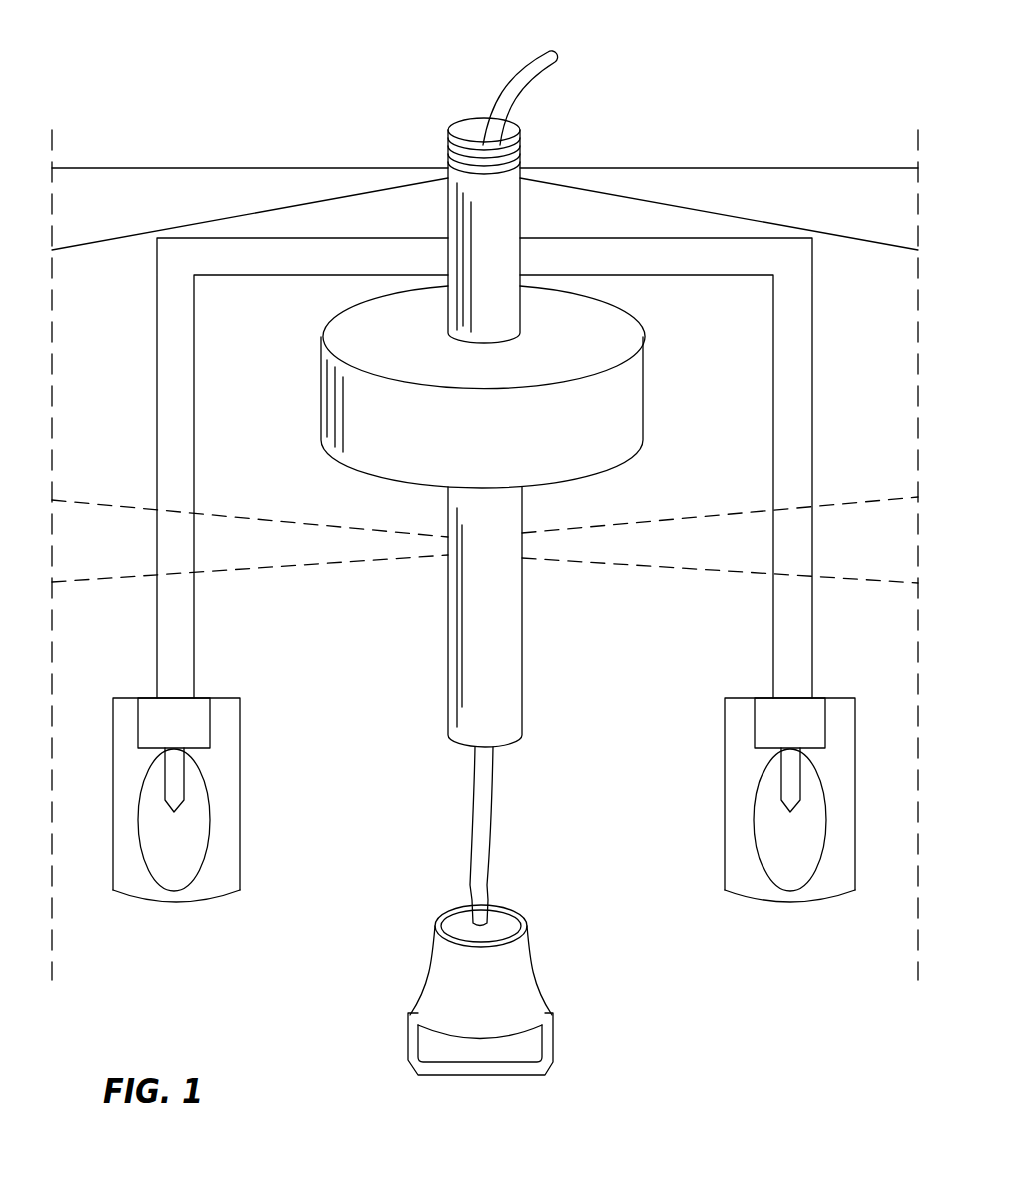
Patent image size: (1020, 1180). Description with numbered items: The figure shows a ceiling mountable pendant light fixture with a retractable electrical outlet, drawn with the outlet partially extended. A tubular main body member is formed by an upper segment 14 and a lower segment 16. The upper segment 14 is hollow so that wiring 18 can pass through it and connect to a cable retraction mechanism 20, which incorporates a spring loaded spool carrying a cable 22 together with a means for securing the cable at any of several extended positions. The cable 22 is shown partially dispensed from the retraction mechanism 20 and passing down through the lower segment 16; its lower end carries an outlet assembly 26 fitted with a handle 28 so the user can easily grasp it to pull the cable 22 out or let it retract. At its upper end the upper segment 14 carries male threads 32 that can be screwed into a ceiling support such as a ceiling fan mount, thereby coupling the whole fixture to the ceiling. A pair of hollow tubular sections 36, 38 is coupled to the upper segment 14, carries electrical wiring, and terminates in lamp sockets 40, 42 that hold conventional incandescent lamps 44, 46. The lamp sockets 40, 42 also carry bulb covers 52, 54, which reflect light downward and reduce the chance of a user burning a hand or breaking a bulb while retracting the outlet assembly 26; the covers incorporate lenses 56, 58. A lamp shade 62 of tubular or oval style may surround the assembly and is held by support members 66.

The upper segment 14 is at (446, 194).
The lower segment 16 is at (510, 705).
The wiring 18 is at (497, 84).
The cable retraction mechanism 20 is at (620, 405).
The cable 22 is at (475, 815).
The outlet assembly 26 is at (515, 990).
The handle 28 is at (480, 1077).
The male threads 32 is at (522, 152).
The tubular section 36 is at (203, 255).
The tubular section 38 is at (795, 340).
The lamp socket 40 is at (190, 713).
The lamp socket 42 is at (775, 712).
The incandescent lamp 44 is at (210, 803).
The incandescent lamp 46 is at (778, 890).
The bulb cover 52 is at (242, 866).
The bulb cover 54 is at (725, 835).
The lens 56 is at (135, 900).
The lens 58 is at (843, 905).
The lamp shade 62 is at (55, 372).
The support members 66 is at (245, 215).